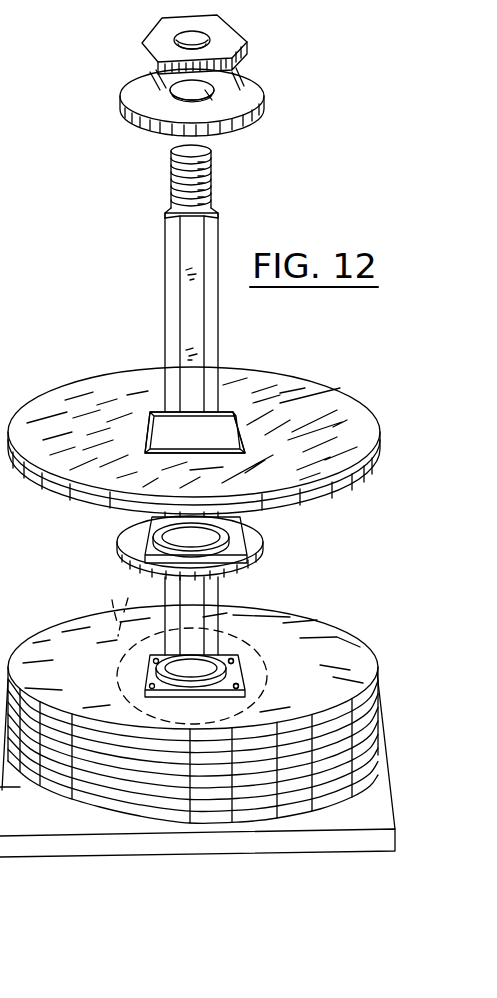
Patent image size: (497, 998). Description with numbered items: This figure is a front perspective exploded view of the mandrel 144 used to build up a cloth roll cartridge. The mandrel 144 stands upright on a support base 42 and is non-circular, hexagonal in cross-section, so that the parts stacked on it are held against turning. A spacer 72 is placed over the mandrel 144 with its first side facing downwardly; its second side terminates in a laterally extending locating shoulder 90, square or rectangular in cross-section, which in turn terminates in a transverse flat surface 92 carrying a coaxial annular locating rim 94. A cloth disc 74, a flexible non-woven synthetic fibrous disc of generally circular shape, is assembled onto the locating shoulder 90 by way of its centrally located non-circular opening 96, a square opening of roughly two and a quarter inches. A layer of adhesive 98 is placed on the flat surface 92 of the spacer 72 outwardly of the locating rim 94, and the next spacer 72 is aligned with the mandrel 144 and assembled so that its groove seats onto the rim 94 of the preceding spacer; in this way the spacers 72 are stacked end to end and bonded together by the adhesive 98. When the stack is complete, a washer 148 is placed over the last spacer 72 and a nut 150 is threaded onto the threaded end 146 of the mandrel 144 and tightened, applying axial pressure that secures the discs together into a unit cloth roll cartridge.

The support base 42 is at (60, 855).
The spacer 72 is at (135, 578).
The cloth disc 74 is at (333, 393).
The locating shoulder 90 is at (242, 560).
The transverse flat surface 92 is at (252, 540).
The locating rim 94 is at (152, 524).
The non-circular opening 96 is at (236, 413).
The adhesive 98 is at (233, 660).
The mandrel 144 is at (165, 312).
The threaded end 146 is at (212, 184).
The washer 148 is at (243, 80).
The nut 150 is at (232, 45).